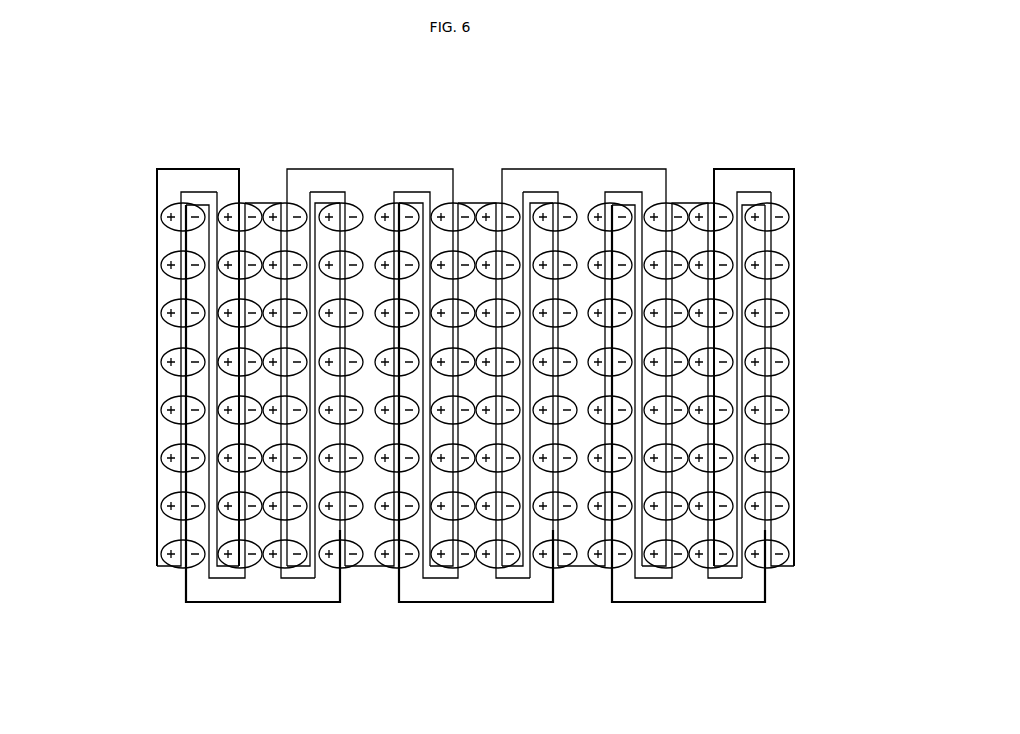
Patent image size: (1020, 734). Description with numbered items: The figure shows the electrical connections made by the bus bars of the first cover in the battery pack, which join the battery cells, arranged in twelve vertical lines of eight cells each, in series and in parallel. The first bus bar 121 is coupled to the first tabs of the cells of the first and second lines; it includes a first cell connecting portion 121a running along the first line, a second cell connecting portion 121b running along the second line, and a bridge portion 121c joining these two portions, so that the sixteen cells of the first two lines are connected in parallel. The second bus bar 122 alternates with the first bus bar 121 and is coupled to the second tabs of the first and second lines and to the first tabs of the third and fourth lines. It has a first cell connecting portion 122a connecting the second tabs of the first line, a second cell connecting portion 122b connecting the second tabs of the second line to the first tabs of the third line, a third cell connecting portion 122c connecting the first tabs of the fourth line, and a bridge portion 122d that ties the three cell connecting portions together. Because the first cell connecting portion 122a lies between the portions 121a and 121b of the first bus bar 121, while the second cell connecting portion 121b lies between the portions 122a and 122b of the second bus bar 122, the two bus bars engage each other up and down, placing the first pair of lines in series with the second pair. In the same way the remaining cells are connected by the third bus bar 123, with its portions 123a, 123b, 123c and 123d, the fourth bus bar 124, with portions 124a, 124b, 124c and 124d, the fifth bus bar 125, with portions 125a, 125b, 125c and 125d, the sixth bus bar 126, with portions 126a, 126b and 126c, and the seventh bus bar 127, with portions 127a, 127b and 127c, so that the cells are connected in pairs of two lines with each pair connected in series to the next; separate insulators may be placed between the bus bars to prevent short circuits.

The first bus bar 121 is at (136, 367).
The first cell connecting portion 121a is at (163, 237).
The second cell connecting portion 121b is at (217, 289).
The bridge portion 121c is at (183, 182).
The second bus bar 122 is at (237, 450).
The first cell connecting portion 122a is at (200, 573).
The second cell connecting portion 122b is at (257, 570).
The third cell connecting portion 122c is at (319, 427).
The bridge portion 122d is at (215, 598).
The third bus bar 123 is at (370, 308).
The third bus bar first portion 123a is at (297, 190).
The third bus bar second portion 123b is at (373, 194).
The third bus bar third portion 123c is at (441, 190).
The third bus bar fourth portion 123d is at (345, 182).
The fourth bus bar 124 is at (459, 450).
The fourth bus bar first portion 124a is at (425, 573).
The fourth bus bar second portion 124b is at (485, 570).
The fourth bus bar third portion 124c is at (542, 427).
The fourth bus bar fourth portion 124d is at (440, 598).
The fifth bus bar 125 is at (582, 308).
The fifth bus bar first portion 125a is at (515, 190).
The fifth bus bar second portion 125b is at (588, 194).
The fifth bus bar third portion 125c is at (651, 190).
The fifth bus bar fourth portion 125d is at (558, 188).
The sixth bus bar 126 is at (686, 450).
The sixth bus bar first portion 126a is at (656, 575).
The sixth bus bar second portion 126b is at (692, 570).
The sixth bus bar third portion 126c is at (752, 428).
The seventh bus bar 127 is at (813, 367).
The seventh bus bar first portion 127a is at (740, 238).
The seventh bus bar second portion 127b is at (870, 186).
The seventh bus bar third portion 127c is at (765, 181).